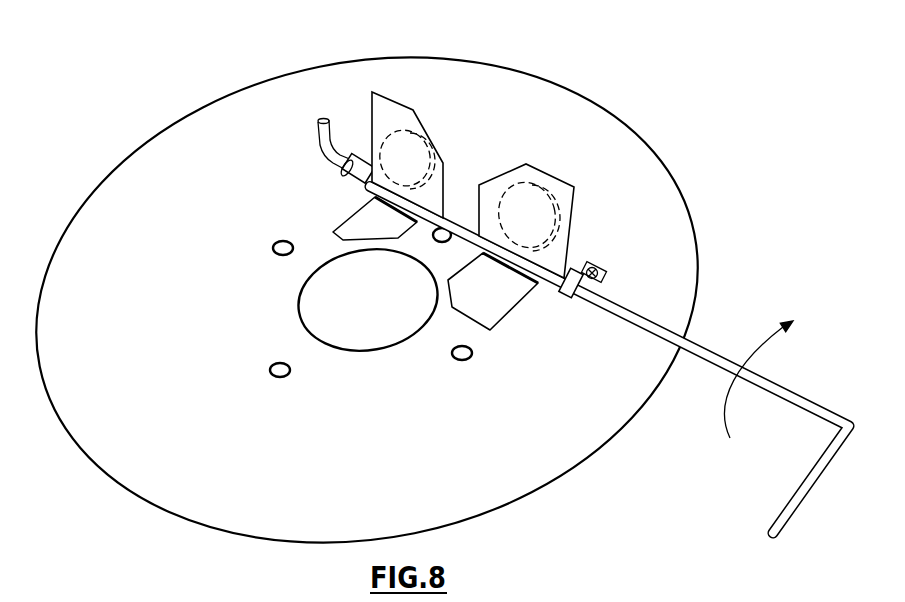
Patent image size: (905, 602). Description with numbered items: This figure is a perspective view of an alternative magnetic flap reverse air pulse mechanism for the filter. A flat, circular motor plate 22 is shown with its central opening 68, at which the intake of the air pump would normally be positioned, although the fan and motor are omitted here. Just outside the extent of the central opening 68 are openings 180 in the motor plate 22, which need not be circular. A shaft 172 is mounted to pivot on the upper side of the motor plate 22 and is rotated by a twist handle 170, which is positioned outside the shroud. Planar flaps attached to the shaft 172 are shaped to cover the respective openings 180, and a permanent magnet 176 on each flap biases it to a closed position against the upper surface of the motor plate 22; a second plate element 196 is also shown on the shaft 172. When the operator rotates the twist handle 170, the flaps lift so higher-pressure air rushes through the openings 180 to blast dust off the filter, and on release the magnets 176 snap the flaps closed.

The motor plate 22 is at (662, 190).
The central opening 68 is at (313, 298).
The twist handle 170 is at (786, 507).
The shaft 172 is at (710, 343).
The permanent magnet 176 is at (412, 149).
The openings 180 is at (357, 222).
The mounting plate 196 is at (538, 198).